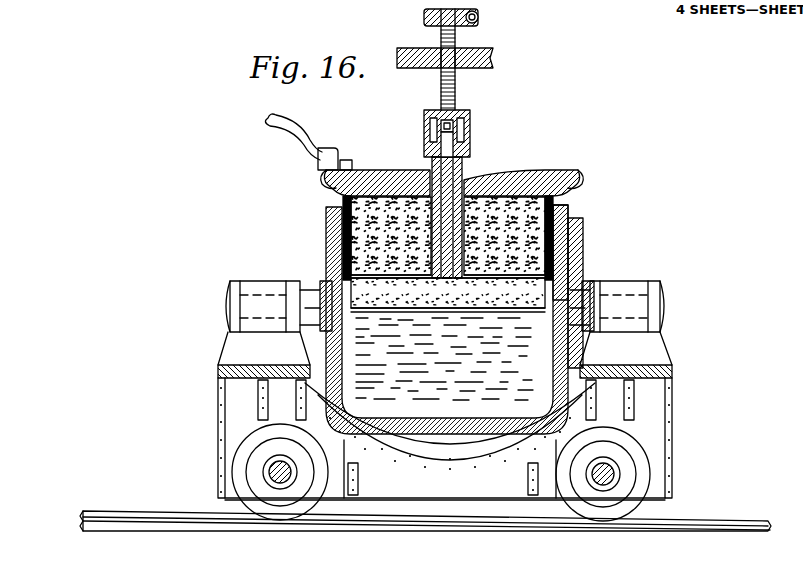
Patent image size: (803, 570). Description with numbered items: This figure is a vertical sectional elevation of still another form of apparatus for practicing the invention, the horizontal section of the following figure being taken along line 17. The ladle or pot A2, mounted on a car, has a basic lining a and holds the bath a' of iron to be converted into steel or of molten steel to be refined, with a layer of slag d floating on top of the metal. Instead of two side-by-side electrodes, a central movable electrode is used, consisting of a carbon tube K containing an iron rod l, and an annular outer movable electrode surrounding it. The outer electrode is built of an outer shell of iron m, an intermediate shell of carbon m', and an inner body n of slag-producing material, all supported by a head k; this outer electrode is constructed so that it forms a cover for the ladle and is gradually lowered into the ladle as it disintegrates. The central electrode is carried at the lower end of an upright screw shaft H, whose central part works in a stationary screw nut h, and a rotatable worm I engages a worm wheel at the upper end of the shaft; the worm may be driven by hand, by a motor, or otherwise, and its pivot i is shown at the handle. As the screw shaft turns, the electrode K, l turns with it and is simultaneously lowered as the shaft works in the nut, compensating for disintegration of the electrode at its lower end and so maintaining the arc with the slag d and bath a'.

The pivot pin of handle i is at (424, 16).
The worm I is at (480, 19).
The screw nut h is at (456, 68).
The screw shaft H is at (441, 90).
The carbon tube K is at (470, 148).
The iron rod l is at (452, 160).
The head k is at (528, 182).
The section line 17 is at (656, 199).
The outer shell of iron m is at (482, 238).
The intermediate shell of carbon m' is at (588, 252).
The inner body of slag producing material n is at (583, 262).
The ladle carriage A2 is at (445, 384).
The slag d is at (443, 282).
The bath a' is at (448, 356).
The basic lining a is at (447, 319).